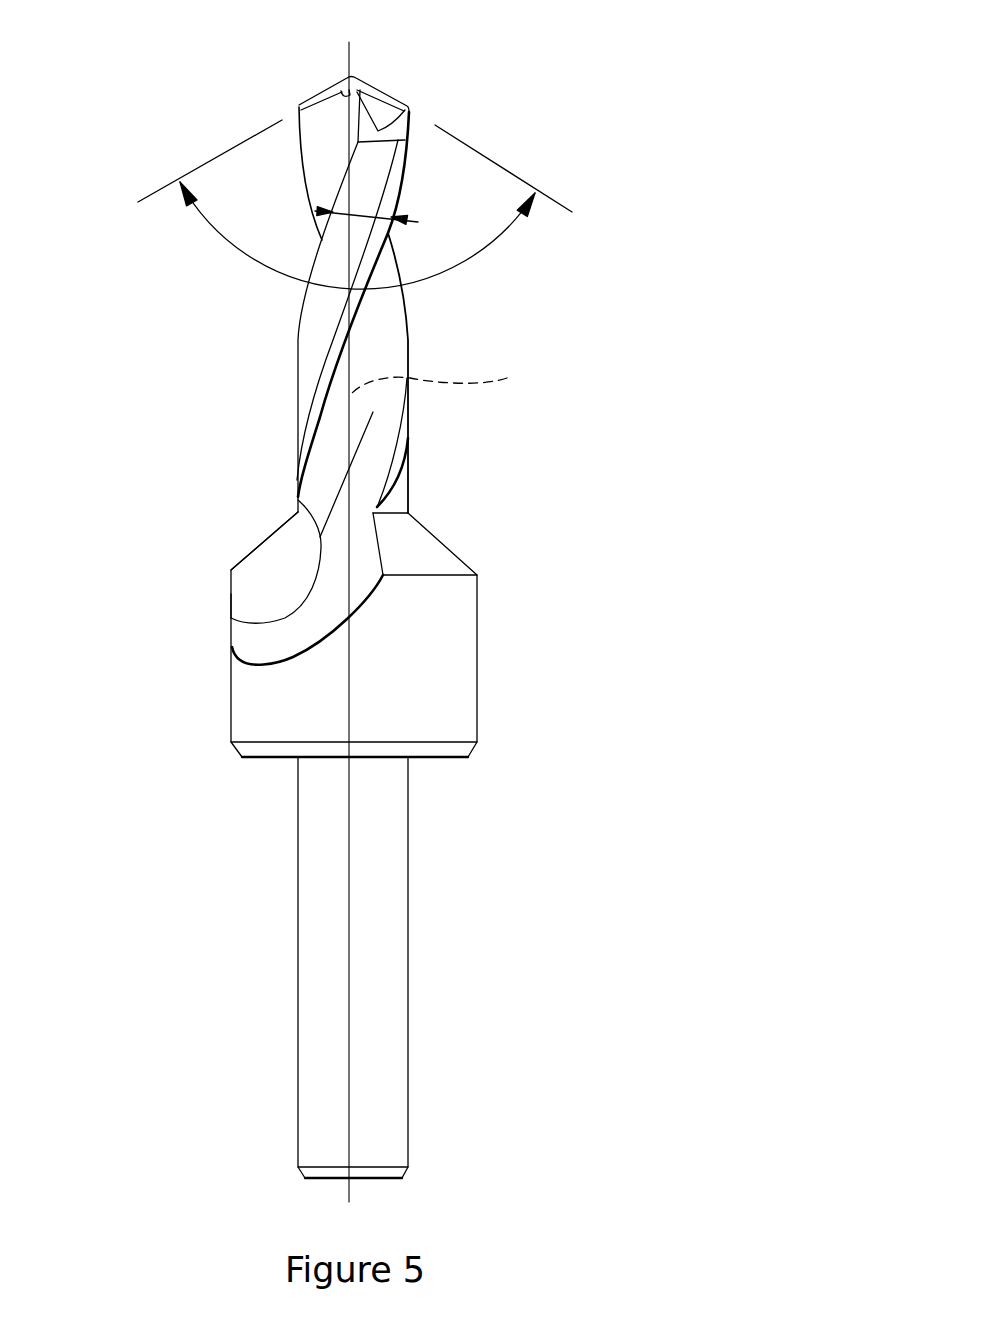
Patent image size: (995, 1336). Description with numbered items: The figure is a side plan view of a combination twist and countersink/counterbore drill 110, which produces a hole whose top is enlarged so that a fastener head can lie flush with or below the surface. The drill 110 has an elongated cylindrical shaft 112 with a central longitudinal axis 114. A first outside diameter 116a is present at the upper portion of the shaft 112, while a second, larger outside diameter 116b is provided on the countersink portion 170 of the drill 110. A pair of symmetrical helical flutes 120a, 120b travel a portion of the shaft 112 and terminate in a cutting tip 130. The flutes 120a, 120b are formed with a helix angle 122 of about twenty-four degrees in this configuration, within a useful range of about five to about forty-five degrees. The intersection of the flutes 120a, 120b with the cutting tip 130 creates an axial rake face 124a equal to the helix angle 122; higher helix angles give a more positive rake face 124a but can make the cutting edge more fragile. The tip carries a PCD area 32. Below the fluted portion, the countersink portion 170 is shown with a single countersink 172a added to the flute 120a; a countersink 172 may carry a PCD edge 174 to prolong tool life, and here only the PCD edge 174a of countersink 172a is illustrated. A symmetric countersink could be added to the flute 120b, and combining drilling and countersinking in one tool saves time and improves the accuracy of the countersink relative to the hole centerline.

The cutting tip 130 is at (547, 67).
The PCD area 32 is at (387, 93).
The rake face 124a is at (348, 118).
The combination twist and countersink/counterbore drill 110 is at (657, 172).
The elongated cylindrical shaft 112 is at (613, 378).
The helical flute 120a is at (340, 338).
The helix angle 122 is at (366, 212).
The central longitudinal axis 114 is at (461, 376).
The helical flute 120b is at (407, 428).
The first outside diameter 116a is at (410, 473).
The second outside diameter 116b is at (477, 628).
The countersink portion 170 is at (577, 583).
The countersink 172 is at (210, 577).
The countersink 172a is at (247, 553).
The PCD edge 174 is at (168, 561).
The PCD edge 174a is at (231, 594).